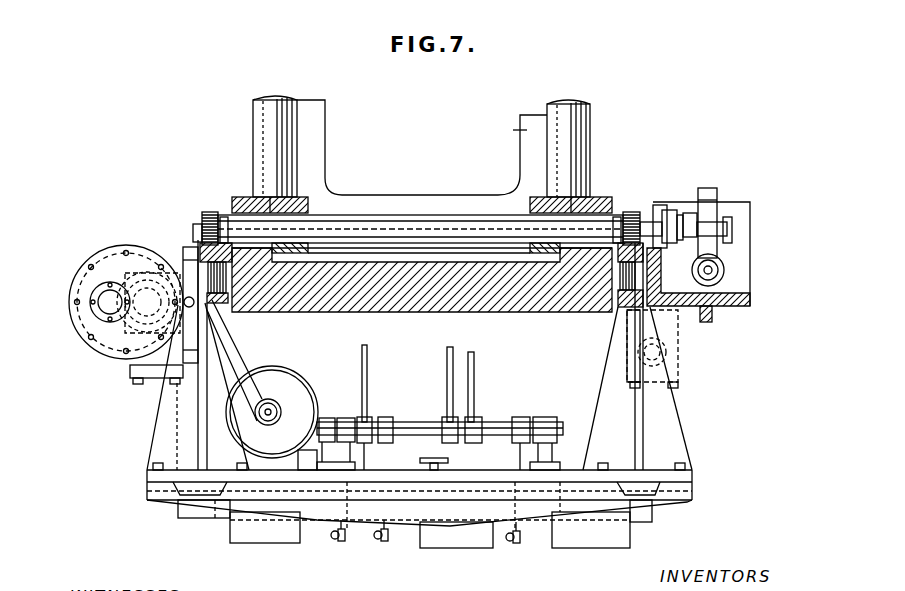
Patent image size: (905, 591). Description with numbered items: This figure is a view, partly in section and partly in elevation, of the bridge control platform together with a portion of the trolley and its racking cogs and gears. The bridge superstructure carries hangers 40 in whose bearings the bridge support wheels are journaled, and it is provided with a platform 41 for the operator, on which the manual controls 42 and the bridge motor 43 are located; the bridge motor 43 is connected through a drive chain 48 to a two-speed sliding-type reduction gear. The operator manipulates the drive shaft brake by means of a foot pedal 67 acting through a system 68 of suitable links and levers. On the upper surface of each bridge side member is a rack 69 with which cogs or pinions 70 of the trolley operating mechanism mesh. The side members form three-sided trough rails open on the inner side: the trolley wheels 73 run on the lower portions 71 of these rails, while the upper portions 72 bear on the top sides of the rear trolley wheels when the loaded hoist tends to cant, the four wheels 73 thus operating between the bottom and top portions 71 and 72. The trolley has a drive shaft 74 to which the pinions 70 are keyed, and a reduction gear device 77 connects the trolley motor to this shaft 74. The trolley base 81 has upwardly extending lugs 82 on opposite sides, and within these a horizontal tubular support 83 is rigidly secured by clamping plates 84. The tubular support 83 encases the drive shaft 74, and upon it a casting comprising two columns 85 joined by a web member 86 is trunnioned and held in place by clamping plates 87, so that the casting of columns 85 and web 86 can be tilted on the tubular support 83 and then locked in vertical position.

The hangers 40 is at (131, 369).
The platform 41 is at (477, 481).
The manual controls 42 is at (447, 377).
The bridge motor 43 is at (303, 383).
The drive chain 48 is at (243, 361).
The foot pedal 67 is at (446, 460).
The system of links and levers 68 is at (322, 500).
The rack 69 is at (200, 229).
The cogs or pinions 70 is at (206, 212).
The lower portions of trolley rails 71 is at (217, 303).
The upper portions of trolley rails 72 is at (207, 250).
The trolley wheels 73 is at (196, 250).
The trolley drive shaft 74 is at (225, 213).
The reduction gear device 77 is at (713, 189).
The trolley base 81 is at (413, 297).
The lugs 82 is at (257, 252).
The horizontal tubular support 83 is at (400, 214).
The clamping plates 84 is at (241, 197).
The columns 85 is at (297, 103).
The web member 86 is at (514, 130).
The clamping plates 87 is at (313, 197).